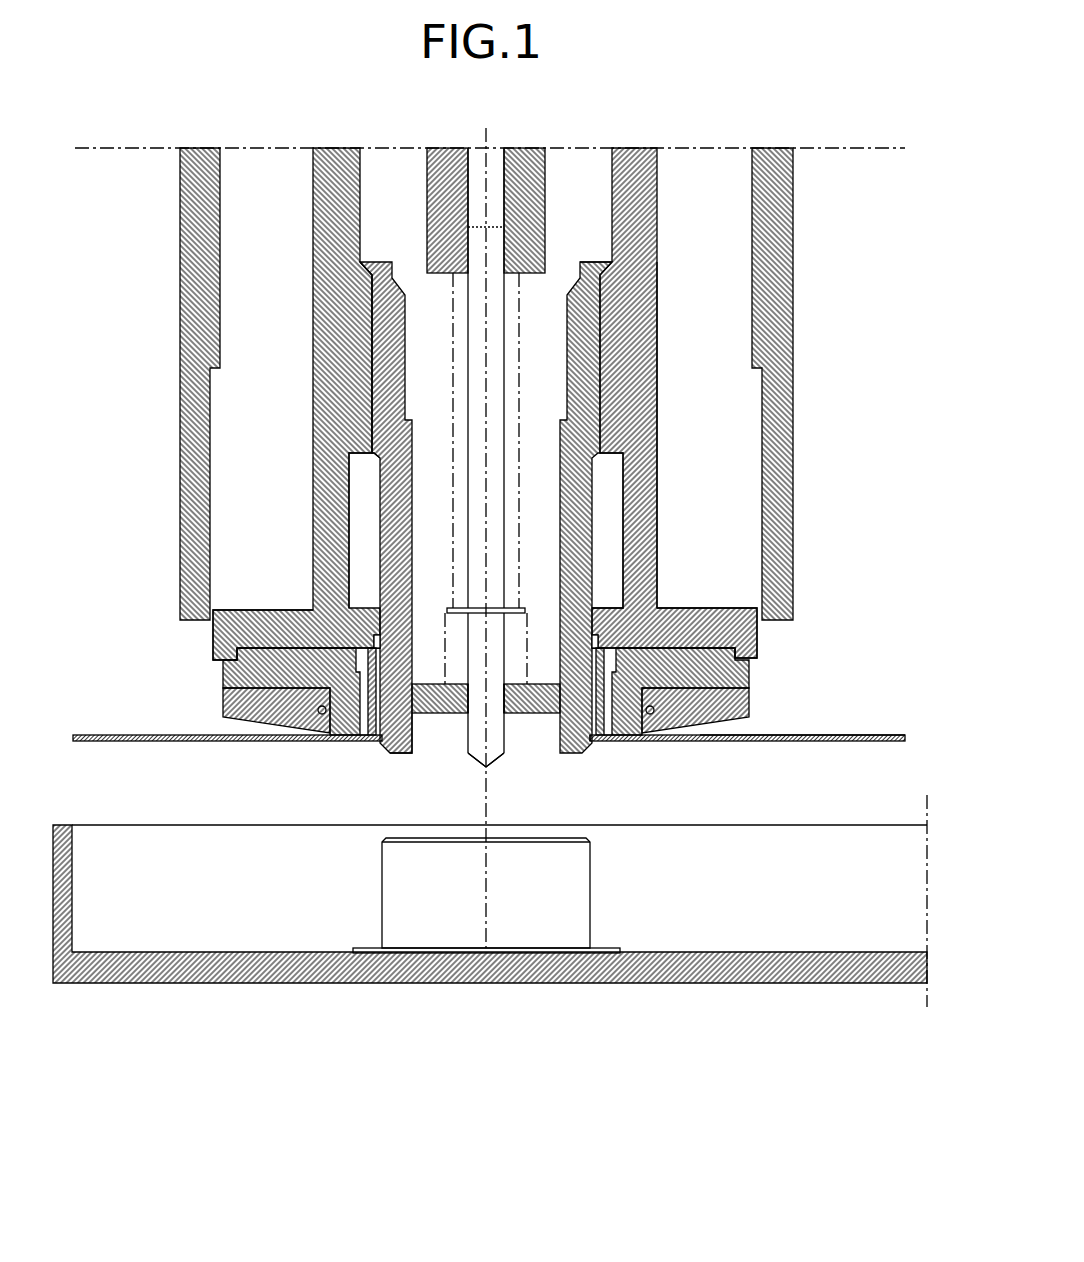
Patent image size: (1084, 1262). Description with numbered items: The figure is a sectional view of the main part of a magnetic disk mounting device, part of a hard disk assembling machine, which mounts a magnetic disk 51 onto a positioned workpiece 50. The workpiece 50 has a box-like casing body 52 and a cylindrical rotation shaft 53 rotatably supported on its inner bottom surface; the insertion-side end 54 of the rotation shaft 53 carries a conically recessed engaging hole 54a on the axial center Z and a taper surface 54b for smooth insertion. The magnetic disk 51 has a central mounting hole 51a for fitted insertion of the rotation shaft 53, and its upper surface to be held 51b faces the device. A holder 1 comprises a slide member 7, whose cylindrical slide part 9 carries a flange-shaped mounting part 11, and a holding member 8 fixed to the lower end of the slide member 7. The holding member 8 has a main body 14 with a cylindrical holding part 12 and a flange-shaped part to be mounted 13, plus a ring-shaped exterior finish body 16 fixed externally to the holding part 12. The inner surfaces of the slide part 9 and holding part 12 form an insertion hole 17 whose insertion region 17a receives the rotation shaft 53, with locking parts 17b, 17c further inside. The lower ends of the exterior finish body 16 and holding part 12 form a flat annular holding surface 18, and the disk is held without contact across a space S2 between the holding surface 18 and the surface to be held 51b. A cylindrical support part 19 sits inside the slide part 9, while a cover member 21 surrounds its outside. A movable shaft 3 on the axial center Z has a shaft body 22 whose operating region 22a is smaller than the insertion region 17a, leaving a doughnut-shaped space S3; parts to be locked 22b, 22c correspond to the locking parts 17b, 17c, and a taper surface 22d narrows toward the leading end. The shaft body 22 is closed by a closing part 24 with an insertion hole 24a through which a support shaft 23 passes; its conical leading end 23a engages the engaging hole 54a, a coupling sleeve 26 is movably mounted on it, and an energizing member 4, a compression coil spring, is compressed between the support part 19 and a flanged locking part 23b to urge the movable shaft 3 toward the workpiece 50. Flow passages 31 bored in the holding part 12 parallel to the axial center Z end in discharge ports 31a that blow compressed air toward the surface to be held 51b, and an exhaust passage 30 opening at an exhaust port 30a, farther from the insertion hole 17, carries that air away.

The holder 1 is at (663, 178).
The movable shaft 3 is at (598, 487).
The energizing member 4 is at (520, 320).
The slide member 7 is at (663, 292).
The holding member 8 is at (752, 683).
The slide part 9 is at (658, 393).
The mounting part 11 is at (737, 607).
The holding part 12 is at (640, 695).
The part to be mounted 13 is at (213, 660).
The main body 14 is at (223, 678).
The exterior finish body 16 is at (223, 700).
The insertion hole 17 is at (405, 216).
The insertion region 17a is at (377, 648).
The locking part 17b is at (360, 260).
The locking part 17c is at (377, 650).
The holding surface 18 is at (632, 740).
The support part 19 is at (548, 176).
The cover member 21 is at (793, 312).
The shaft body 22 is at (590, 522).
The operating region 22a is at (603, 660).
The part to be locked 22b is at (612, 262).
The part to be locked 22c is at (597, 633).
The taper surface 22d is at (388, 748).
The support shaft 23 is at (467, 430).
The leading end 23a is at (493, 762).
The locking part 23b is at (514, 598).
The closing part 24 is at (440, 715).
The insertion hole 24a is at (470, 713).
The coupling sleeve 26 is at (447, 643).
The exhaust passage 30 is at (317, 710).
The exhaust port 30a is at (650, 714).
The flow passage 31 is at (606, 740).
The discharge port 31a is at (353, 741).
The workpiece 50 is at (750, 1015).
The magnetic disk 51 is at (905, 741).
The mounting hole 51a is at (584, 748).
The surface to be held 51b is at (770, 735).
The casing body 52 is at (170, 984).
The rotation shaft 53 is at (590, 905).
The insertion-side end 54 is at (382, 856).
The engaging hole 54a is at (492, 838).
The taper surface 54b is at (590, 840).
The space S2 is at (307, 740).
The doughnut-shaped space S3 is at (377, 752).
The axial center Z is at (489, 915).